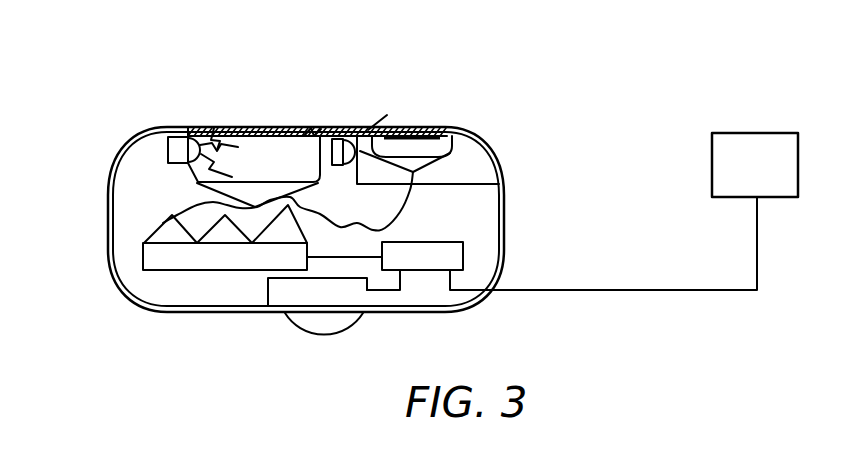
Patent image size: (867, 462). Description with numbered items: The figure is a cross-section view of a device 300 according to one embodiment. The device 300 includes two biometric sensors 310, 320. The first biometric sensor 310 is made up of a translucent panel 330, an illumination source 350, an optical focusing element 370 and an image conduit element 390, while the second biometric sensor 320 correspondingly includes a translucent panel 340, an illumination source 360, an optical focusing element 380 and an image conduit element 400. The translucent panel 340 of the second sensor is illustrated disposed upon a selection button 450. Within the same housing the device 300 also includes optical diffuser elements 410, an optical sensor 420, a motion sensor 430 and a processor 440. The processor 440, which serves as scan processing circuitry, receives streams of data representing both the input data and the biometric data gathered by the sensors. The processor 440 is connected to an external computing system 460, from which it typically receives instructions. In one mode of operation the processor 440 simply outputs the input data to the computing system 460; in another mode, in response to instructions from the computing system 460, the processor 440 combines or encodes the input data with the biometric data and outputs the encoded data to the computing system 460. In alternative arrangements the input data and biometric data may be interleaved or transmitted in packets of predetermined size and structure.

The device 300 is at (585, 118).
The biometric sensor 310 is at (232, 49).
The biometric sensor 320 is at (459, 82).
The translucent panel 330 is at (245, 127).
The translucent panel 340 is at (419, 127).
The illumination source 350 is at (168, 135).
The illumination source 360 is at (334, 130).
The optical focusing element 370 is at (225, 188).
The optical focusing element 380 is at (432, 163).
The image conduit element 390 is at (198, 204).
The image conduit element 400 is at (350, 222).
The optical diffuser elements 410 is at (144, 240).
The optical sensor 420 is at (143, 258).
The motion sensor 430 is at (367, 293).
The processor 440 is at (433, 272).
The selection button 450 is at (468, 153).
The computing system 460 is at (775, 178).